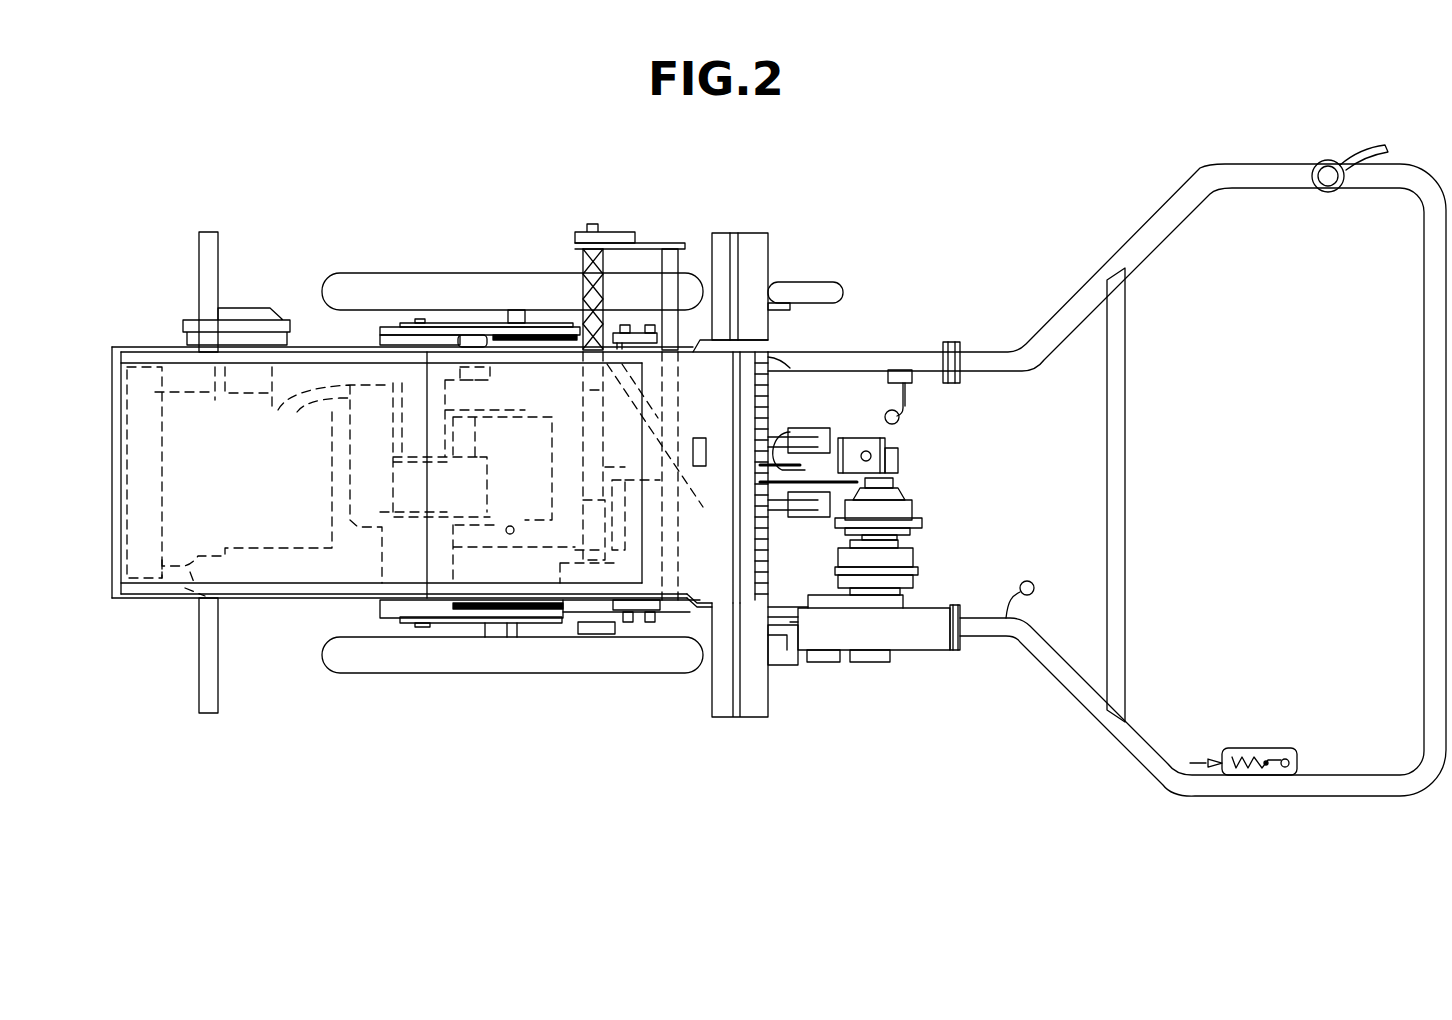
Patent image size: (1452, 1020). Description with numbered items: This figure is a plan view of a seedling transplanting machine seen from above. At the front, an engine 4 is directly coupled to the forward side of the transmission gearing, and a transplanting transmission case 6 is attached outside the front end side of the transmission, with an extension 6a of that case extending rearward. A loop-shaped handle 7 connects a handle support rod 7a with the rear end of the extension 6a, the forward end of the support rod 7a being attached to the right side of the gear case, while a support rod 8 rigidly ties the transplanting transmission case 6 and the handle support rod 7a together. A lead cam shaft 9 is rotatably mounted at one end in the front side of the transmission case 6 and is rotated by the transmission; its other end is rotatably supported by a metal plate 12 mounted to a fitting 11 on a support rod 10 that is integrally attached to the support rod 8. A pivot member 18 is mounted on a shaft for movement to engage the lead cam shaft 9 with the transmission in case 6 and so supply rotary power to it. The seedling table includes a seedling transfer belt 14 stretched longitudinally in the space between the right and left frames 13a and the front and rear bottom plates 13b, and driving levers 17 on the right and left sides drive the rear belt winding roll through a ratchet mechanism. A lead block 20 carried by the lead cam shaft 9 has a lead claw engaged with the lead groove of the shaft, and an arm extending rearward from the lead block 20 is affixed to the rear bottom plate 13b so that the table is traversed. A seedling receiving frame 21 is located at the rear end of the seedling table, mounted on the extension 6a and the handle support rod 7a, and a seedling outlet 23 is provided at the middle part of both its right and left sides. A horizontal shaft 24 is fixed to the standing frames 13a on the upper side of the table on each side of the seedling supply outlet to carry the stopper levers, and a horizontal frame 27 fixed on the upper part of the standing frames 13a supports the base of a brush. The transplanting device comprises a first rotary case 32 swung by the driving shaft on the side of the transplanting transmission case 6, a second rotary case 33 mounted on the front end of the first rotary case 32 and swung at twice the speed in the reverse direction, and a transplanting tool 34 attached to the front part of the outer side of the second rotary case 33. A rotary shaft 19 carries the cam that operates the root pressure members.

The engine 4 is at (205, 598).
The transplanting transmission case 6 is at (668, 614).
The extension of the transmission case 6a is at (793, 622).
The handle 7 is at (1432, 192).
The handle support rod 7a is at (947, 350).
The support rod 8 is at (705, 608).
The lead cam shaft 9 is at (583, 270).
The support rod 10 is at (686, 265).
The fitting 11 is at (665, 243).
The metal plate 12 is at (597, 224).
The right and left frames 13a is at (312, 348).
The front and rear bottom plates 13b is at (112, 594).
The seedling transfer belt 14 is at (490, 573).
The driving levers 17 is at (640, 326).
The pivot member 18 is at (683, 505).
The rotary shaft 19 is at (600, 624).
The lead block 20 is at (583, 385).
The seedling receiving frame 21 is at (762, 235).
The seedling outlet 23 is at (790, 430).
The horizontal shaft 24 is at (768, 383).
The horizontal frame 27 is at (787, 352).
The first rotary case 32 is at (915, 550).
The second rotary case 33 is at (912, 500).
The transplanting tool 34 is at (913, 443).